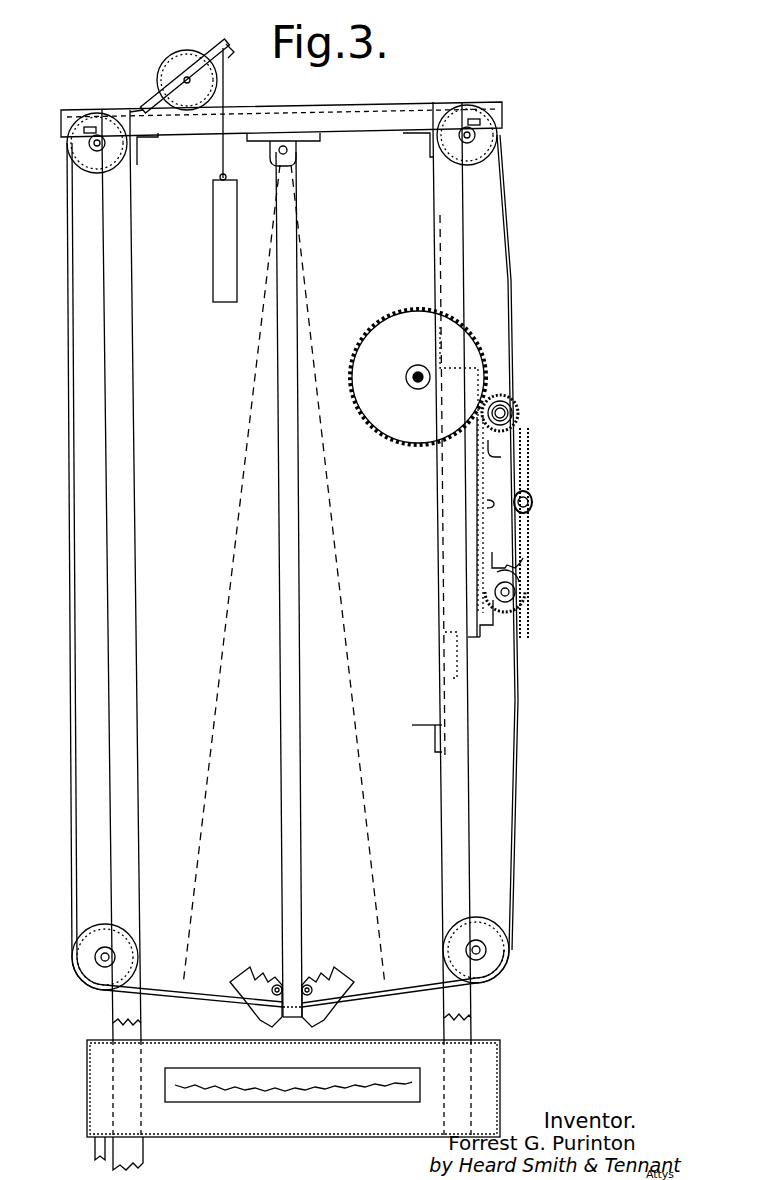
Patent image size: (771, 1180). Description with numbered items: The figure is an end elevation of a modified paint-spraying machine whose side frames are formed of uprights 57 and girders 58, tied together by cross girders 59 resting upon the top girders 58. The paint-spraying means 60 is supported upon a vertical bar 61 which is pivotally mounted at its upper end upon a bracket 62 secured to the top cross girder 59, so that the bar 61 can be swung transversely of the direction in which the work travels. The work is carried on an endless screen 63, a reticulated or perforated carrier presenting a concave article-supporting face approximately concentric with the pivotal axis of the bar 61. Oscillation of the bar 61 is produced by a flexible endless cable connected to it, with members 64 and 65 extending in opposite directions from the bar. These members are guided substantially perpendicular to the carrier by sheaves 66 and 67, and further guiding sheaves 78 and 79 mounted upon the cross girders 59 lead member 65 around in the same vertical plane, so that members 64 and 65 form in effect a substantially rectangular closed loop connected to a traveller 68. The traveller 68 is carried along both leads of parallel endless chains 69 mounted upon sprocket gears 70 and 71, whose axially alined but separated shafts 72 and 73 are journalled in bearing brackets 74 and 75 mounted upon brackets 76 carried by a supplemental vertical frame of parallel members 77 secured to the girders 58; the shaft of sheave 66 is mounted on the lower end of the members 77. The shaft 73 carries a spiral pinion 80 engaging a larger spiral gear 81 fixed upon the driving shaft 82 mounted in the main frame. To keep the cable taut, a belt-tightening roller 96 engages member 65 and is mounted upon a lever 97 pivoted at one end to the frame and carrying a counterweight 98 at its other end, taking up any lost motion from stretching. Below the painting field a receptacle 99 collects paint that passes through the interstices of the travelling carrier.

The uprights 57 is at (130, 718).
The girders 58 is at (145, 146).
The cross girders 59 is at (350, 108).
The paint-spraying means 60 is at (290, 968).
The vertical bars 61 is at (300, 870).
The bracket 62 is at (298, 148).
The endless screen 63 is at (345, 1082).
The flexible member 64 is at (373, 990).
The flexible member 65 is at (205, 986).
The sheave 66 is at (497, 966).
The guiding sheave 67 is at (78, 960).
The traveller 68 is at (533, 503).
The endless chains 69 is at (529, 473).
The sprocket gear 70 is at (522, 565).
The sprocket gear 71 is at (524, 421).
The shaft 72 is at (512, 603).
The shaft 73 is at (506, 411).
The bearing bracket 74 is at (496, 560).
The bearing bracket 75 is at (491, 446).
The brackets 76 is at (488, 508).
The parallel members 77 is at (443, 566).
The guiding sheave 78 is at (98, 172).
The guiding sheave 79 is at (472, 160).
The spiral pinion 80 is at (497, 394).
The spiral gear 81 is at (406, 311).
The driving shaft 82 is at (410, 372).
The roller 96 is at (186, 60).
The lever 97 is at (230, 58).
The counterweight 98 is at (212, 200).
The receptacle 99 is at (311, 1128).